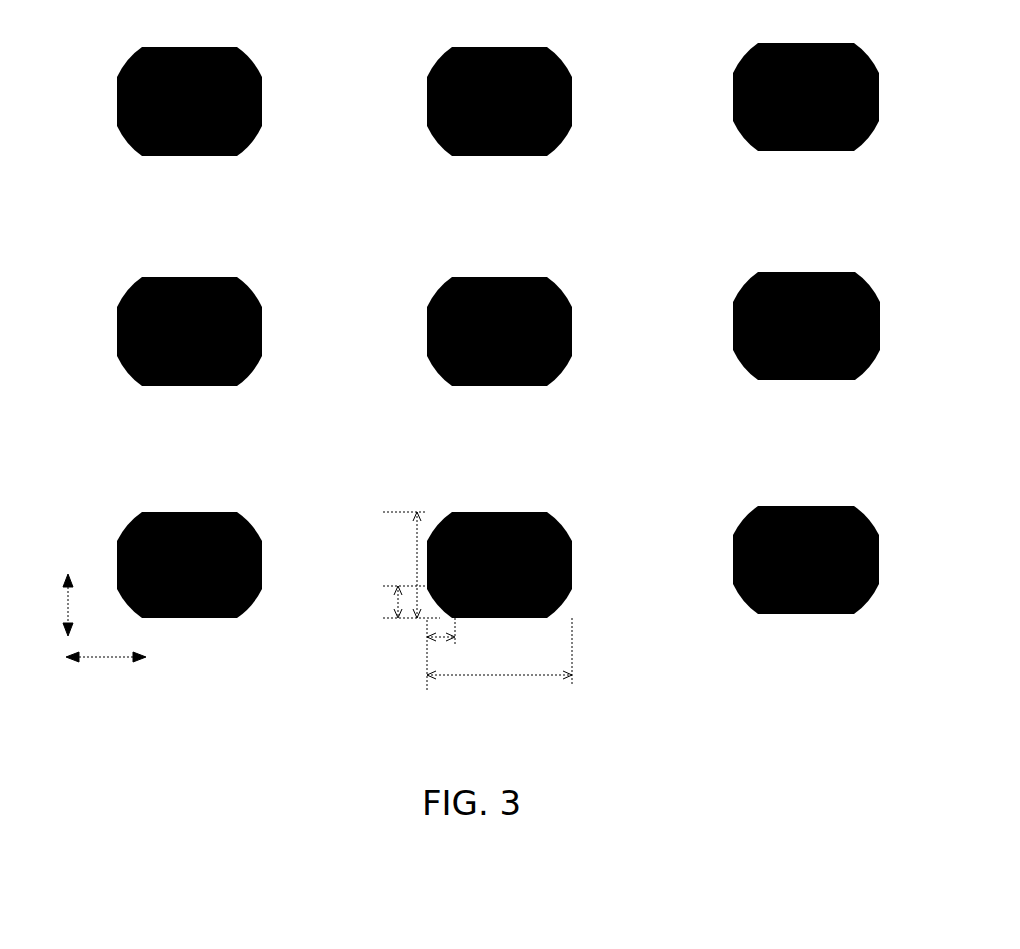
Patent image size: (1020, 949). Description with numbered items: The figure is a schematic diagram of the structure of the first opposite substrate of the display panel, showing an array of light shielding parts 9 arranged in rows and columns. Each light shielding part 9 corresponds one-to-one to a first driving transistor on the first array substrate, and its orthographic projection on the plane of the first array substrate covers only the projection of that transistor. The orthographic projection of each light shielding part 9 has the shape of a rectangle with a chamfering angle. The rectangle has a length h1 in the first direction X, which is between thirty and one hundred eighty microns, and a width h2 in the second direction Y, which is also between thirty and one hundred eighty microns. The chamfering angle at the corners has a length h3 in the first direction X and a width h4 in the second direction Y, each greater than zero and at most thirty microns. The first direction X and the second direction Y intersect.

The light shielding part 9 is at (845, 565).
The length of the rectangle h1 is at (499, 663).
The width of the rectangle h2 is at (410, 565).
The length of the chamfering angle h3 is at (446, 654).
The width of the chamfering angle h4 is at (388, 602).
The first direction X is at (106, 672).
The second direction Y is at (53, 605).